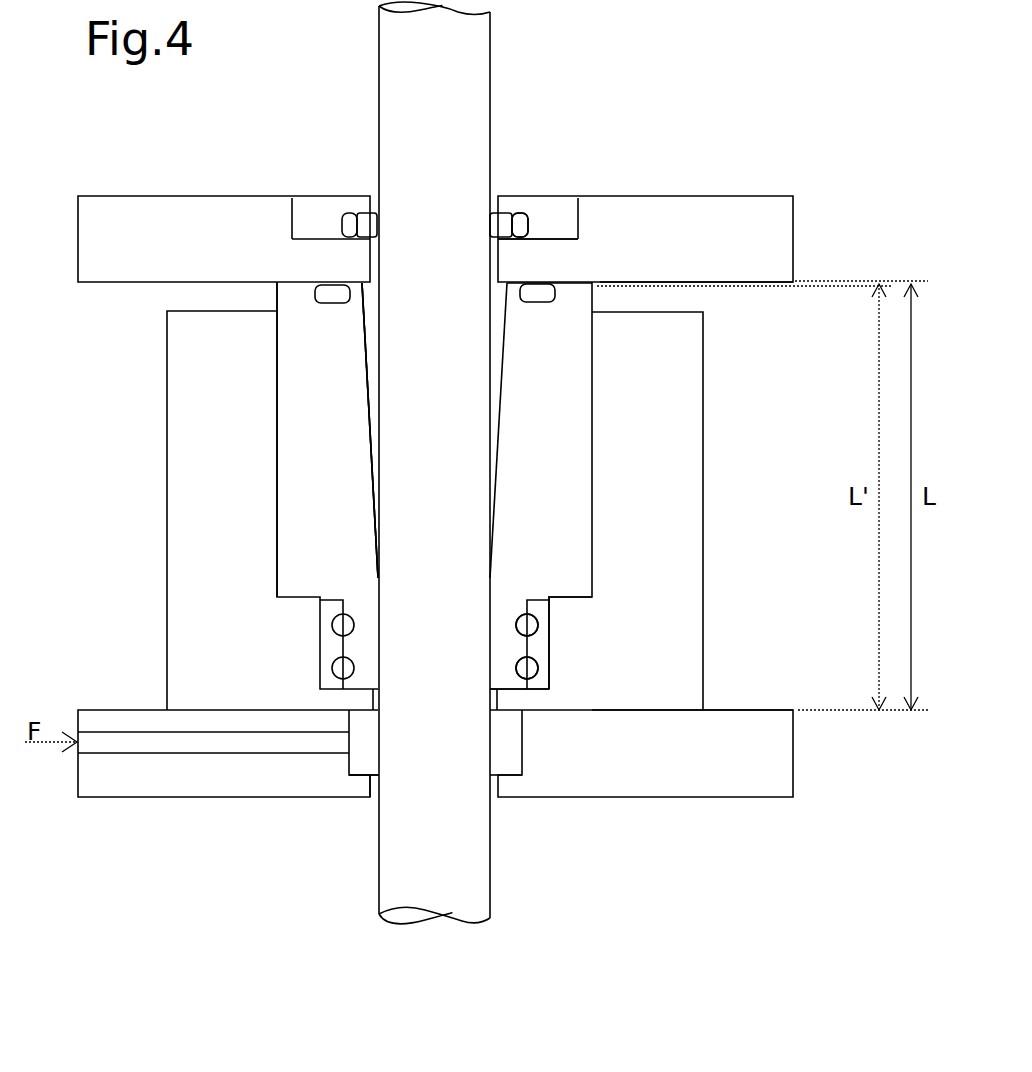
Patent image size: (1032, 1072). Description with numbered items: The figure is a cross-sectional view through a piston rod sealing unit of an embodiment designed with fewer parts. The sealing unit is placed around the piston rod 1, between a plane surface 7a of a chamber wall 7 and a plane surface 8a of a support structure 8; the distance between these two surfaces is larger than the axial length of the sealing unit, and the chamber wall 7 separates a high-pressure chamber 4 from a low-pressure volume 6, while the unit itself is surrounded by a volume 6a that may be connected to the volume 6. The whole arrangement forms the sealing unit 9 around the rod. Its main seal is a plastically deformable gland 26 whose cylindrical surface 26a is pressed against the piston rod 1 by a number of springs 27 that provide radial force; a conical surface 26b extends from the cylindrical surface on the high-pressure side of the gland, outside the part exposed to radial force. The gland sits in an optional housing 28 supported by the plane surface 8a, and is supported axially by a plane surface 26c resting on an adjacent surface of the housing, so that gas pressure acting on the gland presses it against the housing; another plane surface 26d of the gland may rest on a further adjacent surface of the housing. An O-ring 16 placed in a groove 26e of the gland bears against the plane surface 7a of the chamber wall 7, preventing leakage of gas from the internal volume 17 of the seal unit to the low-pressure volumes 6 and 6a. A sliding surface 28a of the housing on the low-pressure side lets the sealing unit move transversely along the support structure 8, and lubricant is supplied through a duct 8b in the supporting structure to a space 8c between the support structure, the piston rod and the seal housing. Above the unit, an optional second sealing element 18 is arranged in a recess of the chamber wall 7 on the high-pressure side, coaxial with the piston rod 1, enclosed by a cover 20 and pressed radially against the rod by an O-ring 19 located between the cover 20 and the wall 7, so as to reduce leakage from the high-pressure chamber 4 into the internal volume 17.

The piston rod 1 is at (478, 70).
The high-pressure chamber 4 is at (270, 106).
The low-pressure volume 6 is at (575, 884).
The volume surrounding the sealing unit 6a is at (186, 510).
The chamber wall 7 is at (705, 200).
The plane surface of chamber wall 7a is at (687, 284).
The support structure 8 is at (683, 787).
The plane surface of support structure 8a is at (733, 710).
The duct 8b is at (203, 742).
The space 8c is at (365, 765).
The bearing unit 9 is at (160, 624).
The O-ring 16 is at (556, 280).
The internal volume 17 is at (372, 387).
The second sealing element 18 is at (508, 197).
The O-ring 19 is at (531, 199).
The cover 20 is at (560, 201).
The plastically deformable gland 26 is at (580, 465).
The cylindrical surface 26a is at (378, 612).
The conical surface 26b is at (367, 348).
The plane surface of gland 26c is at (577, 595).
The plane surface of gland 26d is at (513, 693).
The groove 26e is at (552, 302).
The springs 27 is at (533, 666).
The housing 28 is at (703, 520).
The sliding surface 28a is at (630, 710).